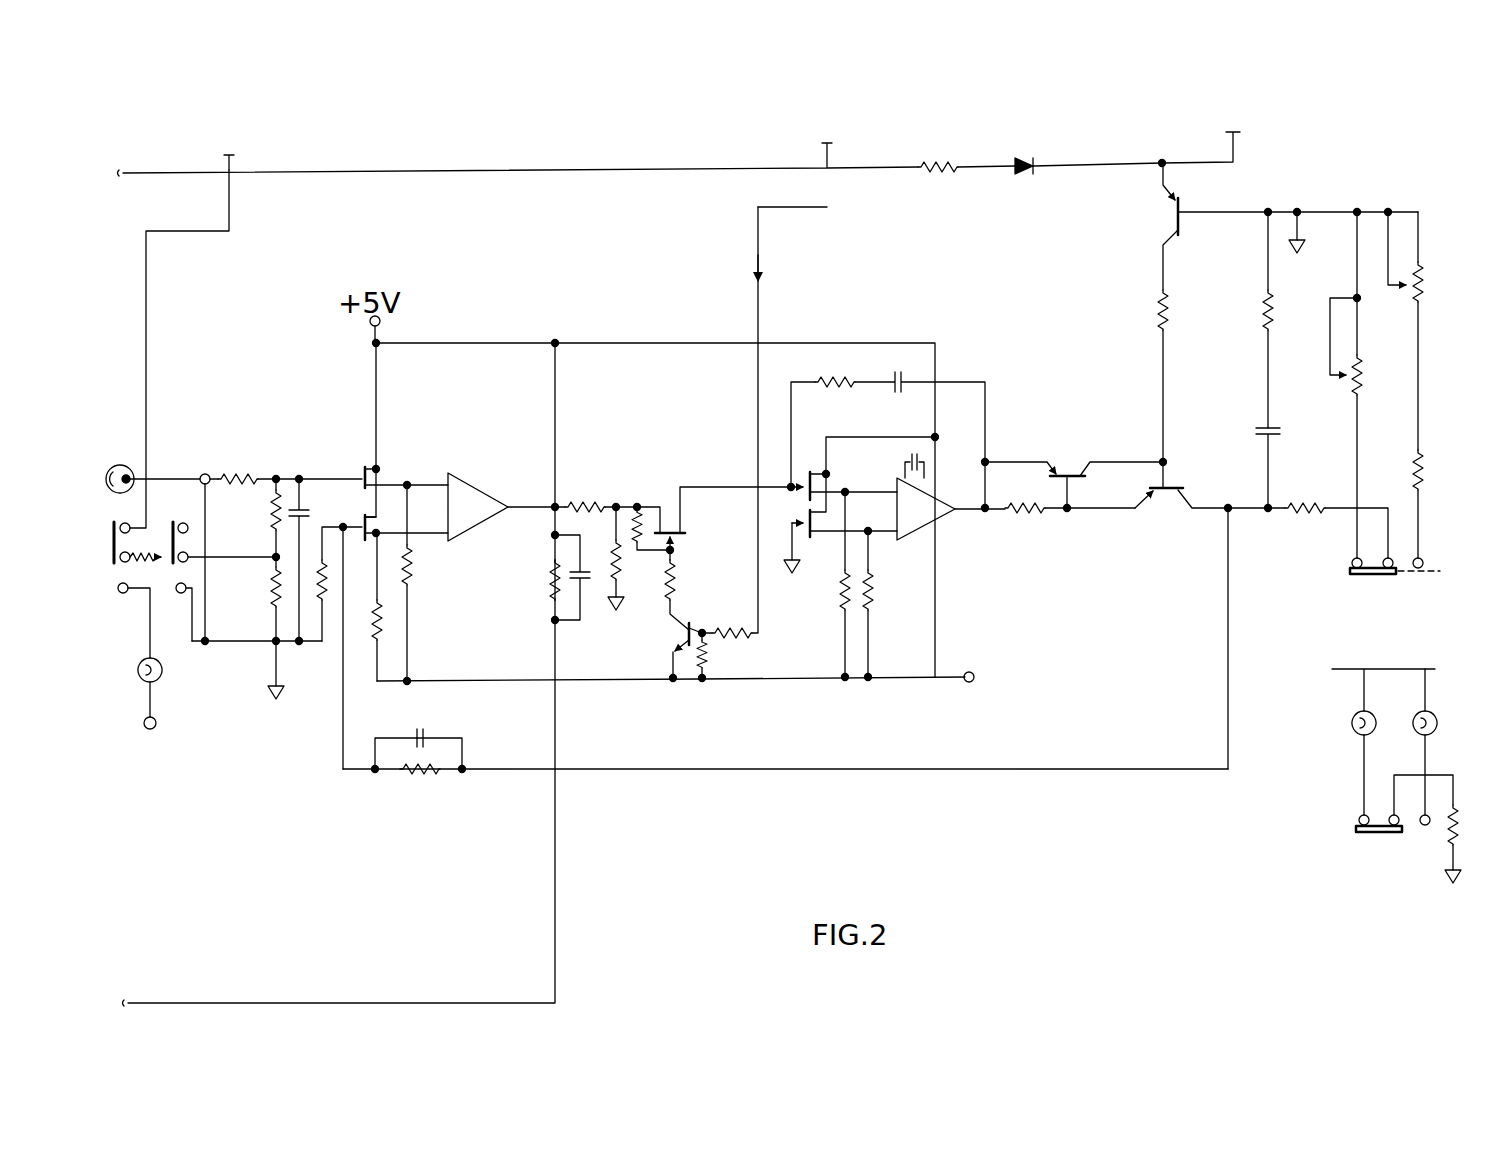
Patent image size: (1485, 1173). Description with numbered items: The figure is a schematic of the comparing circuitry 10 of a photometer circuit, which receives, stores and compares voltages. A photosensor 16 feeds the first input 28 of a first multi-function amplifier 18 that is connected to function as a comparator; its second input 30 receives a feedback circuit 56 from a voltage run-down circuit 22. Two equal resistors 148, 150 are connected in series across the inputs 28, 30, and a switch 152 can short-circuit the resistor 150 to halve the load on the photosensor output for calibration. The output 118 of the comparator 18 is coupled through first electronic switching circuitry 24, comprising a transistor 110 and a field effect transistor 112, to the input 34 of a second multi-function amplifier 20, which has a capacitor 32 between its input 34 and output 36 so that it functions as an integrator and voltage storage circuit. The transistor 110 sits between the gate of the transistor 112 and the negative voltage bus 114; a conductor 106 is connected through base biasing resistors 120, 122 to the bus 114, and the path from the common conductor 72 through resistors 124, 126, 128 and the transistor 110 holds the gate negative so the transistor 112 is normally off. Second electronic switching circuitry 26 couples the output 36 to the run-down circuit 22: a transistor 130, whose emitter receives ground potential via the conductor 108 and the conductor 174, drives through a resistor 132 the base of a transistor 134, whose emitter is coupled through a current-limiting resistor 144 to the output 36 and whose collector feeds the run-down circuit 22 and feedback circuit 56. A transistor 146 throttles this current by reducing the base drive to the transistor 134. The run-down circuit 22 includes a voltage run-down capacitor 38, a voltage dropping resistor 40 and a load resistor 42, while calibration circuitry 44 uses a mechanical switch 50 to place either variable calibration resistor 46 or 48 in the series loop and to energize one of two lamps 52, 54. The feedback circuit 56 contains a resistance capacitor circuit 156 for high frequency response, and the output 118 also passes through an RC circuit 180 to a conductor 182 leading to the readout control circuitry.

The comparing circuitry 10 is at (748, 780).
The photosensor 16 is at (117, 463).
The first multi-function amplifier 18 is at (485, 497).
The second multi-function amplifier 20 is at (915, 545).
The voltage run-down circuit 22 is at (1338, 193).
The first electronic switching circuitry 24 is at (663, 447).
The second electronic switching circuitry 26 is at (1112, 292).
The first input 28 is at (428, 484).
The second input 30 is at (428, 537).
The capacitor 32 is at (887, 376).
The input 34 is at (865, 490).
The output 36 is at (972, 514).
The voltage run-down capacitor 38 is at (1262, 424).
The voltage dropping resistor 40 is at (1262, 303).
The load resistor 42 is at (1297, 515).
The calibration circuitry 44 is at (1445, 220).
The variable calibration resistor 46 is at (1360, 378).
The variable calibration resistor 48 is at (1425, 280).
The mechanical switch 50 is at (1373, 578).
The lamp 52 is at (1352, 730).
The lamp 54 is at (1438, 722).
The feedback circuit 56 is at (905, 768).
The common conductor 72 is at (618, 604).
The conductor 106 is at (760, 300).
The conductor 108 is at (1240, 152).
The transistor 110 is at (681, 640).
The field effect transistor 112 is at (682, 538).
The negative voltage bus 114 is at (810, 681).
The output 118 is at (524, 511).
The base biasing resistor 120 is at (735, 637).
The base biasing resistor 122 is at (707, 655).
The resistor 124 is at (610, 557).
The resistor 126 is at (633, 522).
The resistor 128 is at (673, 590).
The transistor 130 is at (1176, 219).
The resistor 132 is at (1155, 310).
The transistor 134 is at (1158, 492).
The resistor 144 is at (1025, 515).
The transistor 146 is at (1068, 465).
The resistor 148 is at (272, 497).
The resistor 150 is at (272, 585).
The switch 152 is at (165, 580).
The resistance capacitor circuit 156 is at (418, 785).
The conductor 174 is at (388, 170).
The RC circuit 180 is at (548, 577).
The conductor 182 is at (351, 1003).